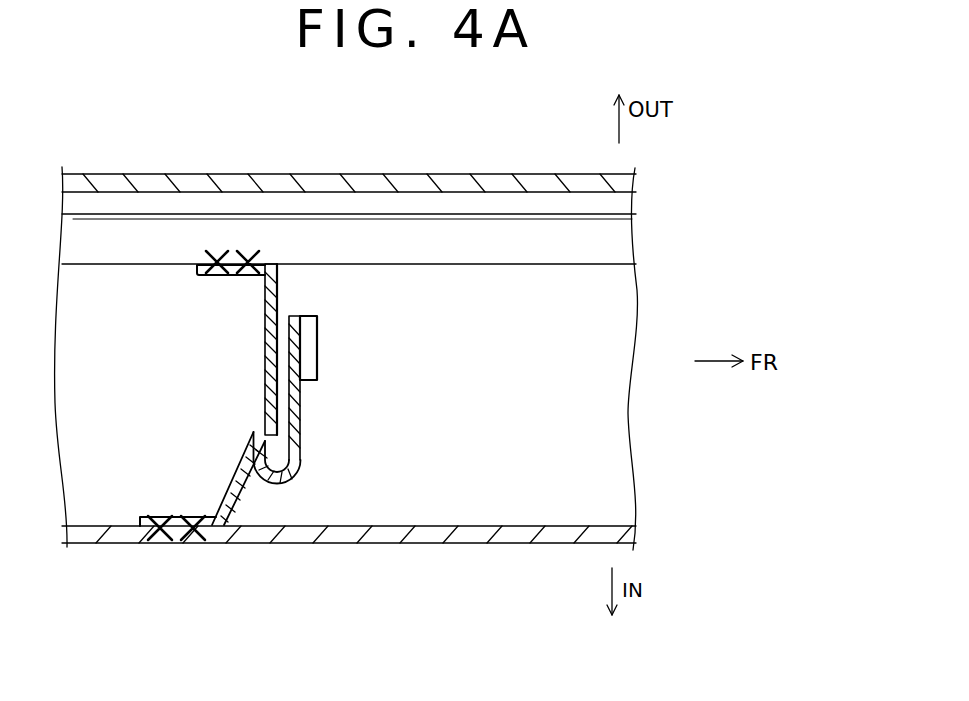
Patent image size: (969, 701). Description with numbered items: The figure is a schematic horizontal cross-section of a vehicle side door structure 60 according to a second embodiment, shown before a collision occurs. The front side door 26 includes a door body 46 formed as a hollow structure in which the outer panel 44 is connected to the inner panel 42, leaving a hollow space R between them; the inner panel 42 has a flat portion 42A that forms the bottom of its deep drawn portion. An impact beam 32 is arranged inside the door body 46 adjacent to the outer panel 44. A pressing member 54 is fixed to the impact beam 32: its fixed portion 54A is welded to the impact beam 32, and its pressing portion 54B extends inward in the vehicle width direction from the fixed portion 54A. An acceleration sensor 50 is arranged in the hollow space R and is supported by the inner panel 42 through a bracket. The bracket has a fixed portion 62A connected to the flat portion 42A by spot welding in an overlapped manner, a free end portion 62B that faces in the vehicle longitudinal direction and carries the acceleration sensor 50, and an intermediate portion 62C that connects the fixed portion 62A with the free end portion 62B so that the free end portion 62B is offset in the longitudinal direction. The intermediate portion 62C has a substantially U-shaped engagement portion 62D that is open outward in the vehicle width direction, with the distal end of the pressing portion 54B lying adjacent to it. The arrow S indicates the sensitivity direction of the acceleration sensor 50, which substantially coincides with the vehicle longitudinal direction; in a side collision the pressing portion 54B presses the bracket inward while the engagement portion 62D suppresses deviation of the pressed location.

The pressing member 54 is at (276, 257).
The fixed portion 54A is at (232, 265).
The pressing portion 54B is at (278, 292).
The impact beam 32 is at (387, 232).
The outer panel 44 is at (548, 182).
The acceleration sensor 50 is at (308, 350).
The free end portion 62B is at (317, 368).
The engagement portion 62D is at (297, 467).
The intermediate portion 62C is at (242, 470).
The fixed portion 62A is at (178, 520).
The vehicle side door structure 60 is at (570, 428).
The door body 46 is at (430, 358).
The front side door 26 is at (430, 358).
The inner panel 42 is at (349, 572).
The flat portion 42A is at (558, 535).
The hollow space R is at (148, 360).
The arrow S is at (320, 325).